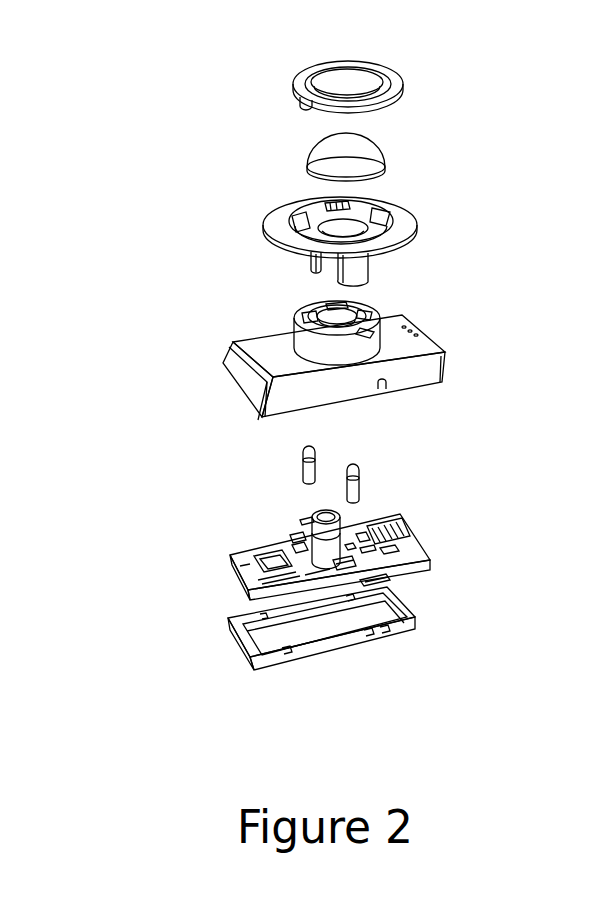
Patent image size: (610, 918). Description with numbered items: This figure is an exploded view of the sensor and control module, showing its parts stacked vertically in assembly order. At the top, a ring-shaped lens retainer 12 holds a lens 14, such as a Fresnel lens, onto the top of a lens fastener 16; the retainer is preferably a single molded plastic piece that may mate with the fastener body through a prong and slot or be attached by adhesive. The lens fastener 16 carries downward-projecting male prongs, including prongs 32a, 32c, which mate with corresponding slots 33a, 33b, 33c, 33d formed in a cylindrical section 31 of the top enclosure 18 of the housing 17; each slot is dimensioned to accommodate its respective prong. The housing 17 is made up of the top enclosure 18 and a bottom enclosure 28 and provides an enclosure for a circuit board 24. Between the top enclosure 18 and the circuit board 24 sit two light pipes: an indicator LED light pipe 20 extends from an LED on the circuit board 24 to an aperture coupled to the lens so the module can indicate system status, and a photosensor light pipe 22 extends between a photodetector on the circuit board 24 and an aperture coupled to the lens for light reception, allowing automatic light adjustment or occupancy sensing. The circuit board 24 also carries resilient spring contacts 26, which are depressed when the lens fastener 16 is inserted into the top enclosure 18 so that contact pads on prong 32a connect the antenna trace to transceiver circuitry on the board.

The lens retainer 12 is at (410, 88).
The lens 14 is at (305, 158).
The lens fastener 16 is at (366, 233).
The housing 17 is at (339, 536).
The top enclosure 18 is at (228, 352).
The indicator LED light pipe 20 is at (300, 466).
The photosensor light pipe 22 is at (361, 487).
The circuit board 24 is at (282, 555).
The resilient spring contacts 26 is at (378, 585).
The bottom enclosure 28 is at (342, 648).
The cylindrical section 31 is at (372, 328).
The male prong 32a is at (368, 270).
The male prong 32c is at (311, 262).
The slot 33a is at (373, 338).
The slot 33b is at (336, 307).
The slot 33c is at (304, 320).
The slot 33d is at (366, 314).